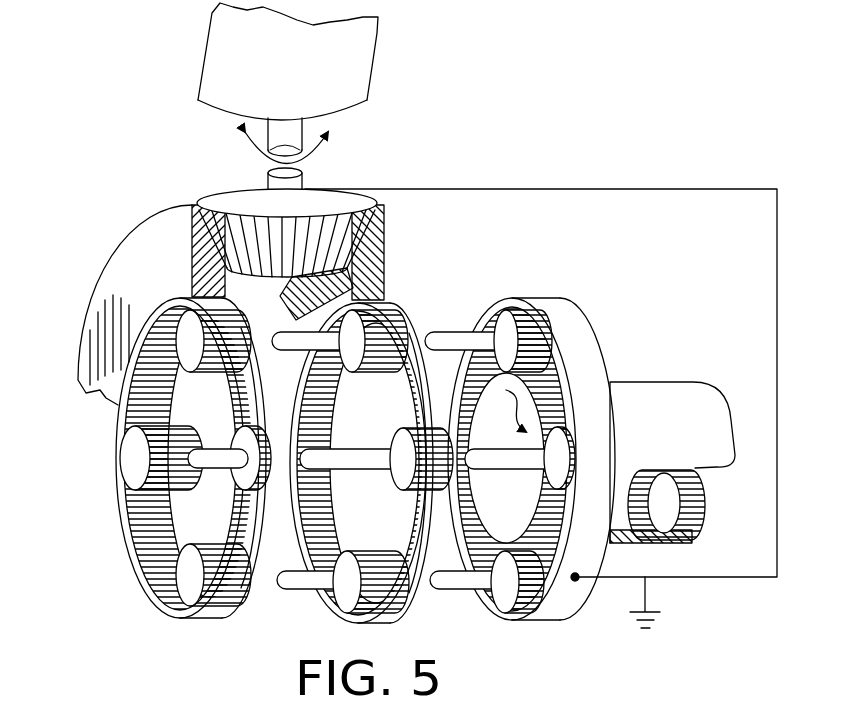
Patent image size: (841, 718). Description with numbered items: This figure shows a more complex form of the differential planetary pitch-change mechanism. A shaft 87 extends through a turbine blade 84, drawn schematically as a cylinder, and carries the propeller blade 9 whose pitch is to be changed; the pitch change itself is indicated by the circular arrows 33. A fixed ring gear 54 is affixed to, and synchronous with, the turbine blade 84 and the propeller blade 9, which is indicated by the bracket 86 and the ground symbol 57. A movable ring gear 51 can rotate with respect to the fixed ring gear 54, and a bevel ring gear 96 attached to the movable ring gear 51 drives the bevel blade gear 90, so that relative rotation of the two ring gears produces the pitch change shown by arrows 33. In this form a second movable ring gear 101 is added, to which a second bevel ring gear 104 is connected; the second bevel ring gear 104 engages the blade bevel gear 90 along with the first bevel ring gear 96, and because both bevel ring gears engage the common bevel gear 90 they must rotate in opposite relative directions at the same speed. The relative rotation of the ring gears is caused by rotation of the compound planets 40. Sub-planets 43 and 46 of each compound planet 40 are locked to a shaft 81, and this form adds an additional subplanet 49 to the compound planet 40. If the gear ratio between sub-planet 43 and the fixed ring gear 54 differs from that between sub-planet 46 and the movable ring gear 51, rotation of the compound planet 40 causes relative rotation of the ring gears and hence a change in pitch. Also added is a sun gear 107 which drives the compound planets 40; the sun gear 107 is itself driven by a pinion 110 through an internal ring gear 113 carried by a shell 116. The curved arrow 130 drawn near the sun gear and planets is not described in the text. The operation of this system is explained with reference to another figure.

The propeller blade 9 is at (355, 53).
The shaft 87 is at (285, 132).
The circular arrows 33 is at (256, 152).
The turbine blade 84 is at (307, 182).
The bevel blade gear 90 is at (362, 200).
The bracket 86 is at (545, 188).
The ground symbol 57 is at (664, 629).
The second bevel ring gear 104 is at (202, 260).
The bevel ring gear 96 is at (386, 238).
The second movable ring gear 101 is at (120, 418).
The subplanet 49 is at (192, 570).
The compound planets 40 is at (98, 485).
The movable ring gear 51 is at (393, 312).
The fixed ring gear 54 is at (546, 428).
The sun gear 107 is at (553, 370).
The sub-planet 46 is at (395, 480).
The shaft 81 is at (292, 582).
The rotation arrow 130 is at (498, 420).
The sub-planet 43 is at (570, 433).
The shell 116 is at (688, 406).
The internal ring gear 113 is at (650, 470).
The pinion 110 is at (697, 511).